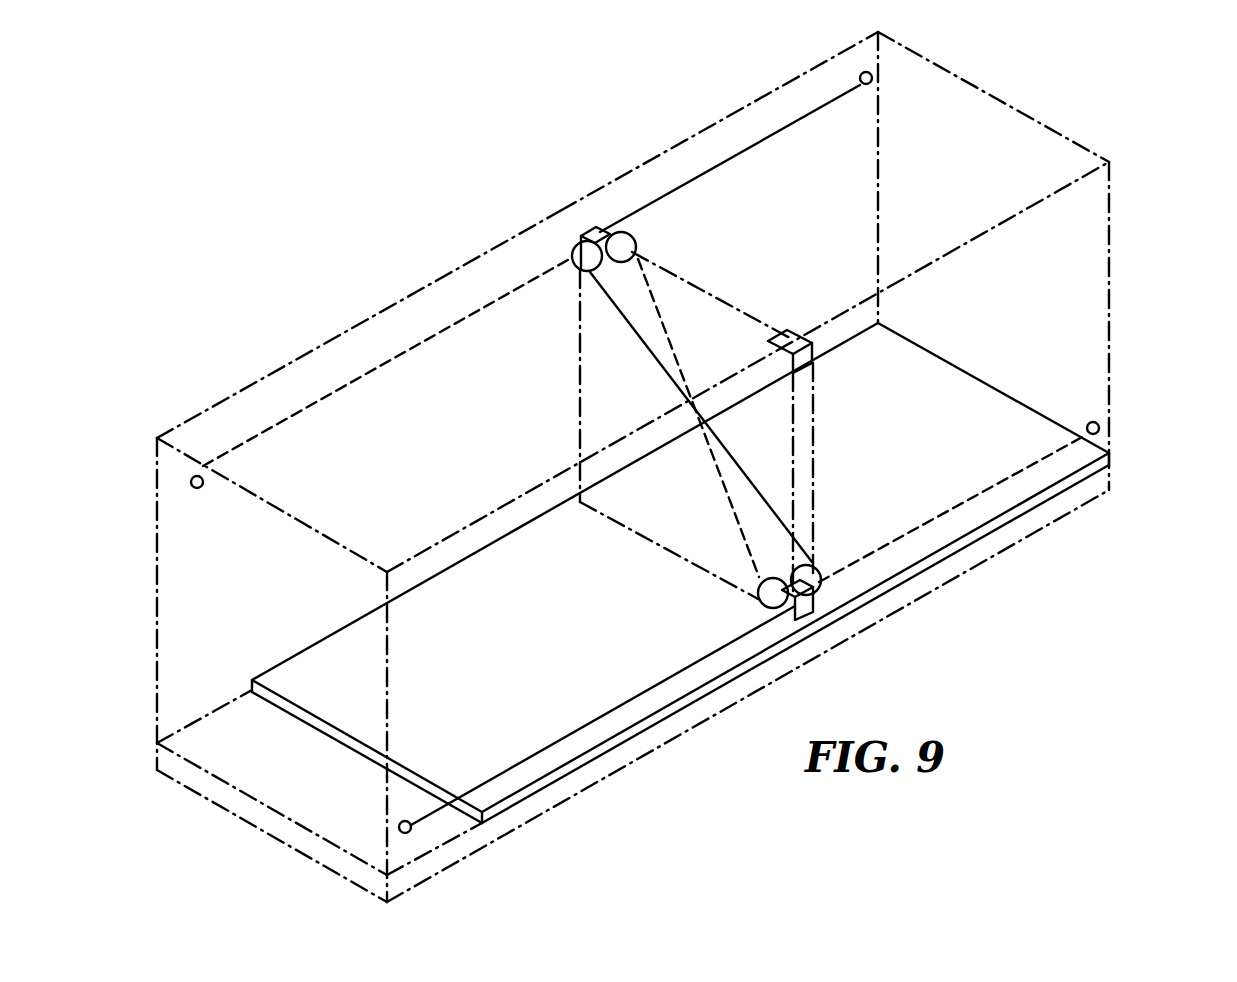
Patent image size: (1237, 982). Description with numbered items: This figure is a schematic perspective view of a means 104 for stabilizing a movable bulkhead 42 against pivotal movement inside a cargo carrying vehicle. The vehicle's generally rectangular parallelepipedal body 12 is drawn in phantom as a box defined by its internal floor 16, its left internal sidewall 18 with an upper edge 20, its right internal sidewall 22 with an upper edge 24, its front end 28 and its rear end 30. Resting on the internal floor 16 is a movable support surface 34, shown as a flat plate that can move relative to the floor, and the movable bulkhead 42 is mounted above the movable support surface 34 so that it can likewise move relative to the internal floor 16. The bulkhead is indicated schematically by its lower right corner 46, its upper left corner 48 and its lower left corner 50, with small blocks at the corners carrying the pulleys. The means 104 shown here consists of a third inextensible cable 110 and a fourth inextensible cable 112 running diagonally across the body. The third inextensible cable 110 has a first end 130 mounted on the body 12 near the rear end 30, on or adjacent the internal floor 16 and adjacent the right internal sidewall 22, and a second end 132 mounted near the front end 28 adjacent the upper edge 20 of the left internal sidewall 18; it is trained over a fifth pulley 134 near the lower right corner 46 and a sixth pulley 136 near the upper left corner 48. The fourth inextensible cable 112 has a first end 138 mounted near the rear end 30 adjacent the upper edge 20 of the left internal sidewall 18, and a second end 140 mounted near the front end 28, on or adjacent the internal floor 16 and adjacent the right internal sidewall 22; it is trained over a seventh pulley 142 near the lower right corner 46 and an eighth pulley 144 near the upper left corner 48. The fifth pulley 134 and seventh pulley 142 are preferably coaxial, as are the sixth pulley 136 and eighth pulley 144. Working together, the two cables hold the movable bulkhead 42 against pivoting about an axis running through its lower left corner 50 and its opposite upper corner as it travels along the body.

The body 12 is at (667, 150).
The internal floor 16 is at (304, 782).
The left internal sidewall 18 is at (455, 434).
The upper edge 20 is at (452, 272).
The right internal sidewall 22 is at (963, 567).
The upper edge 24 is at (540, 483).
The front end 28 is at (248, 823).
The rear end 30 is at (1000, 97).
The movable support surface 34 is at (521, 677).
The movable bulkhead 42 is at (770, 278).
The lower right corner 46 is at (818, 618).
The upper left corner 48 is at (583, 233).
The lower left corner 50 is at (574, 515).
The means for stabilizing 104 is at (670, 544).
The third inextensible cable 110 is at (990, 490).
The fourth inextensible cable 112 is at (783, 128).
The first end 130 is at (1100, 428).
The second end 132 is at (197, 489).
The fifth pulley 134 is at (758, 600).
The sixth pulley 136 is at (626, 247).
The first end 138 is at (866, 85).
The second end 140 is at (399, 827).
The seventh pulley 142 is at (822, 571).
The eighth pulley 144 is at (574, 270).